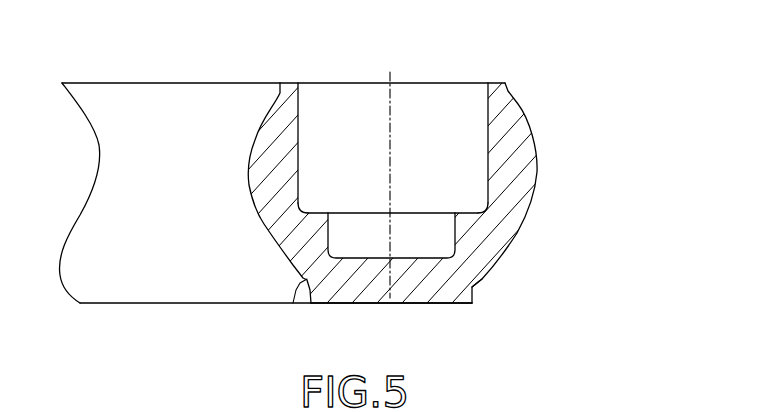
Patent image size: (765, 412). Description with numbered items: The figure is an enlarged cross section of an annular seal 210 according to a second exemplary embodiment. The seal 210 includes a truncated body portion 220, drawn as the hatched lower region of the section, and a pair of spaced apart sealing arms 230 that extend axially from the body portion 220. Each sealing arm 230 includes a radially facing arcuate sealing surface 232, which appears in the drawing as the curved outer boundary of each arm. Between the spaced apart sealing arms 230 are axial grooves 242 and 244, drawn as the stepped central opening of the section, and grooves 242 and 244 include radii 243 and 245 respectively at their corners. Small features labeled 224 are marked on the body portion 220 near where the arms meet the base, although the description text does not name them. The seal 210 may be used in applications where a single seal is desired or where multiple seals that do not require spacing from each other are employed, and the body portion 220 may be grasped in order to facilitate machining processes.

The annular seal 210 is at (567, 92).
The truncated body portion 220 is at (497, 305).
The edge 224 is at (293, 304).
The sealing arm 230 is at (212, 205).
The arcuate sealing surface 232 is at (249, 151).
The axial groove 242 is at (461, 84).
The radius 243 is at (299, 204).
The axial groove 244 is at (412, 207).
The radius 245 is at (337, 256).